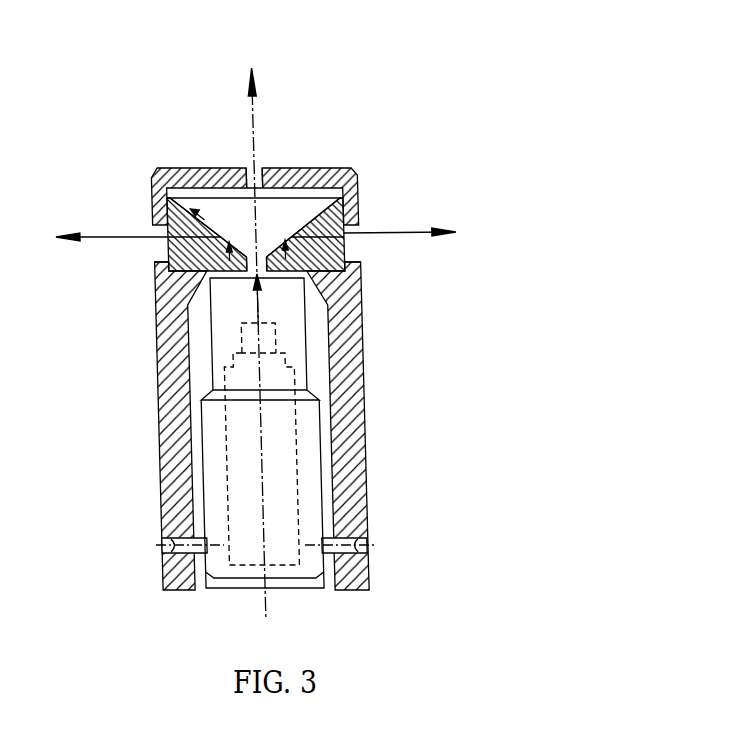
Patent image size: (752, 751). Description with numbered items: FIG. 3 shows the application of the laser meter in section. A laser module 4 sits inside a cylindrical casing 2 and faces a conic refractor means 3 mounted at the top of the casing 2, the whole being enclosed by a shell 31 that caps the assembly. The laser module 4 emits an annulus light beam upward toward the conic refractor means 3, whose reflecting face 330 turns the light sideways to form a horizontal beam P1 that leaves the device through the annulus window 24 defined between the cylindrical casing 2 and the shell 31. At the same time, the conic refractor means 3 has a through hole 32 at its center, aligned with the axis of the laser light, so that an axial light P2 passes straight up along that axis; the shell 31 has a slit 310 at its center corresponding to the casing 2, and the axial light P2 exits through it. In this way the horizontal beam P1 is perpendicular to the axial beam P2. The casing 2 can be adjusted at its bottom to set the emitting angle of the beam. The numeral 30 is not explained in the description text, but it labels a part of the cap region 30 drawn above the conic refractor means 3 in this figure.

The cylindrical casing 2 is at (337, 440).
The conic refractor means 3 is at (247, 274).
The laser module 4 is at (283, 480).
The annulus window 24 is at (162, 246).
The cap 30 is at (278, 166).
The shell 31 is at (181, 168).
The through hole 32 is at (208, 282).
The slit 310 is at (269, 168).
The reflecting face 330 is at (175, 208).
The horizontal light beam P1 is at (397, 235).
The axial light P2 is at (254, 125).